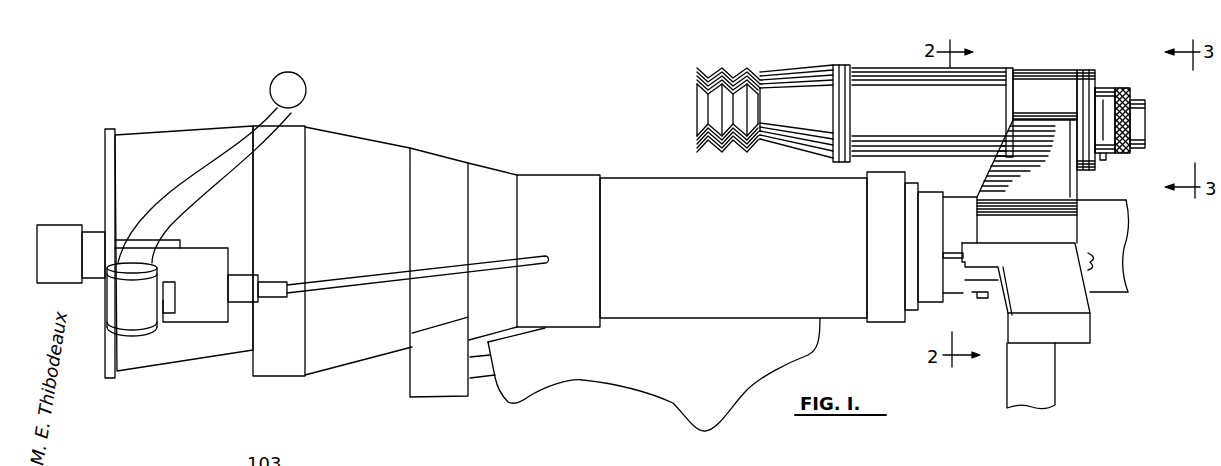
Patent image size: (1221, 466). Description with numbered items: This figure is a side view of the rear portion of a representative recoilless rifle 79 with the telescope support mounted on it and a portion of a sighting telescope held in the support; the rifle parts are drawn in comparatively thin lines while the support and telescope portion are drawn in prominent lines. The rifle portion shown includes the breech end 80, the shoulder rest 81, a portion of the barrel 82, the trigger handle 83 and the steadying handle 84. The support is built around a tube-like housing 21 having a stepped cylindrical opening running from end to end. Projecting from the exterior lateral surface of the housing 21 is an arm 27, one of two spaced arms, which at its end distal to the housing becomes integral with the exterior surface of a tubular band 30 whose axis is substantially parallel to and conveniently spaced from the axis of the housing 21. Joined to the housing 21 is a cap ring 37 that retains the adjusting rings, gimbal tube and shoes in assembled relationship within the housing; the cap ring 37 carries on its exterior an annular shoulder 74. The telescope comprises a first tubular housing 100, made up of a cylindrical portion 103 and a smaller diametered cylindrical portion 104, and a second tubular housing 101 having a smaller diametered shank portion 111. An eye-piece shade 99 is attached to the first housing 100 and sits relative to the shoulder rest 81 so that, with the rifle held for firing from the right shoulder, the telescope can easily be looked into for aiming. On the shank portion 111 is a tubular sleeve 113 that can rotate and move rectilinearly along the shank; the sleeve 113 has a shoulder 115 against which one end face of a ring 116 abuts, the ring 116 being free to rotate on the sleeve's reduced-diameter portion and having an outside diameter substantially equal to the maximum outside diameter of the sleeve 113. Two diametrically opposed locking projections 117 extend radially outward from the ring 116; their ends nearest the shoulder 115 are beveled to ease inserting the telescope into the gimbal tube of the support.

The housing 21 is at (1020, 68).
The arm 27 is at (997, 180).
The tubular band 30 is at (1062, 229).
The cap ring 37 is at (1084, 63).
The annular shoulder 74 is at (1080, 92).
The recoilless rifle 79 is at (96, 153).
The breech end 80 is at (167, 150).
The shoulder rest 81 is at (675, 397).
The barrel 82 is at (1113, 277).
The trigger handle 83 is at (1080, 330).
The steadying handle 84 is at (1015, 385).
The eye-piece shade 99 is at (702, 110).
The first tubular housing 100 is at (873, 64).
The second tubular housing 101 is at (1152, 107).
The cylindrical portion 103 is at (918, 92).
The smaller diametered cylindrical portion 104 is at (1007, 105).
The shank portion 111 is at (1136, 122).
The tubular sleeve 113 is at (1137, 157).
The shoulder 115 is at (1103, 110).
The ring 116 is at (1120, 82).
The locking projections 117 is at (1100, 87).